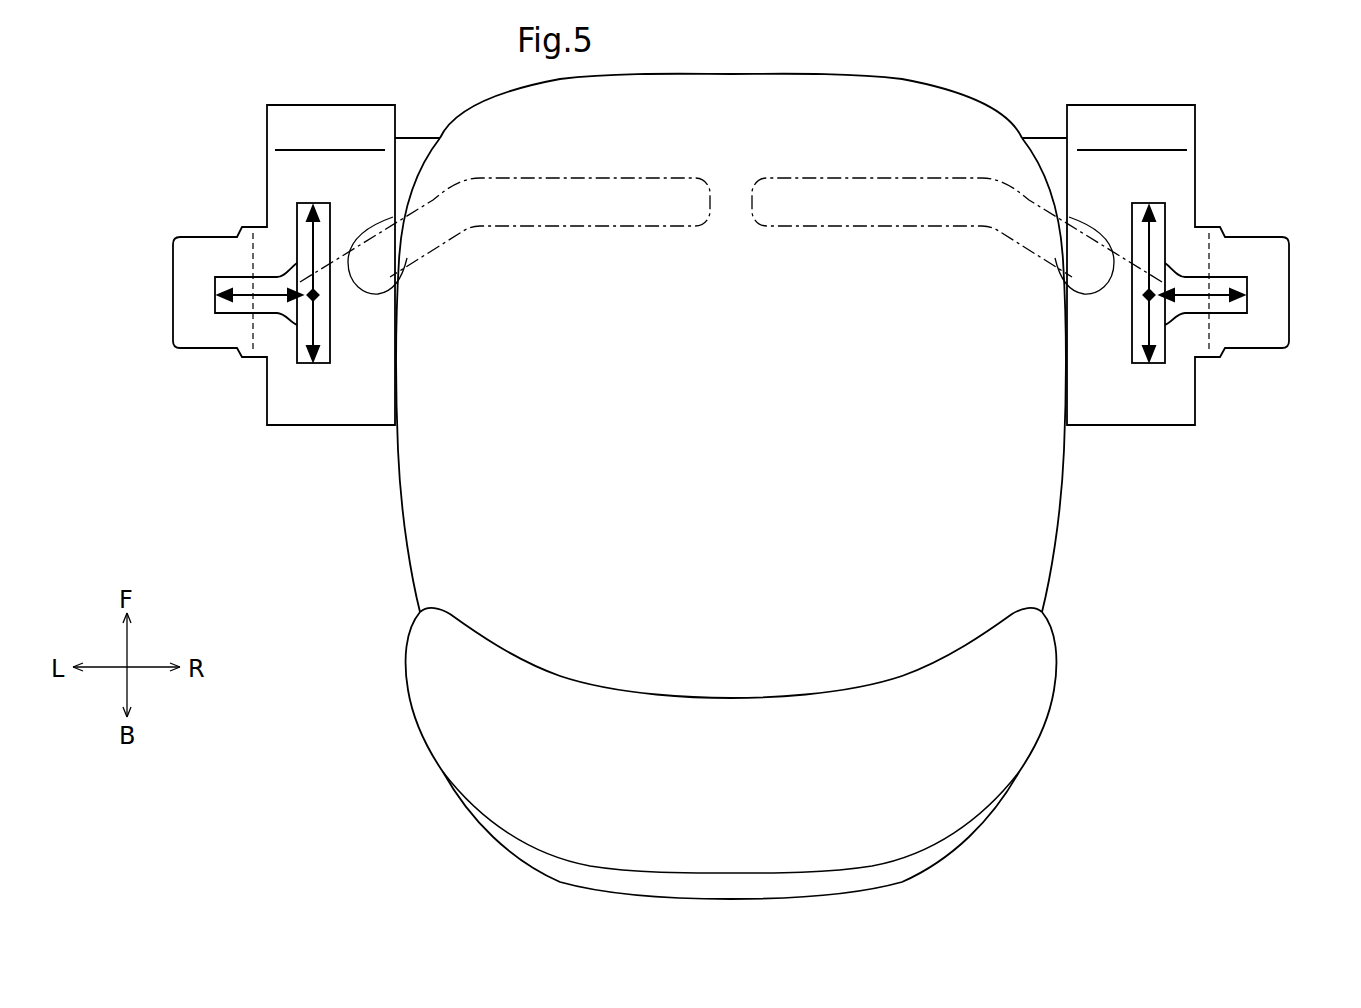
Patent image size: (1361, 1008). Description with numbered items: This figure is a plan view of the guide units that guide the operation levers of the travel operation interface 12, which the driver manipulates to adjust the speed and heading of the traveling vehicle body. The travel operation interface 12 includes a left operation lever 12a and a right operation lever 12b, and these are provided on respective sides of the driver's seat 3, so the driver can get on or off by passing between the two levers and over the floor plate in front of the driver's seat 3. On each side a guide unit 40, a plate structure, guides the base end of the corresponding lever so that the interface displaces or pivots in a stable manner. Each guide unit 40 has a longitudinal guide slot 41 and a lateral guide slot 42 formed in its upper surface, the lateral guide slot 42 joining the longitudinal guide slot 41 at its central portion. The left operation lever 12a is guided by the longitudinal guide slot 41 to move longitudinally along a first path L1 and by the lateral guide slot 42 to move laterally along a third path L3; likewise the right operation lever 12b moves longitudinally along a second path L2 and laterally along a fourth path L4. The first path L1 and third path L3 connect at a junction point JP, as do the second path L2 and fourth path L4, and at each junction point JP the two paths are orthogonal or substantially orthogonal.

The driver's seat 3 is at (966, 846).
The travel operation interface 12 is at (843, 143).
The left operation lever 12a is at (628, 228).
The right operation lever 12b is at (834, 228).
The guide unit 40 is at (237, 152).
The longitudinal guide slot 41 is at (322, 235).
The lateral guide slot 42 is at (243, 284).
The first path L1 is at (310, 240).
The second path L2 is at (1150, 238).
The third path L3 is at (246, 302).
The fourth path L4 is at (1216, 302).
The junction point JP is at (313, 295).